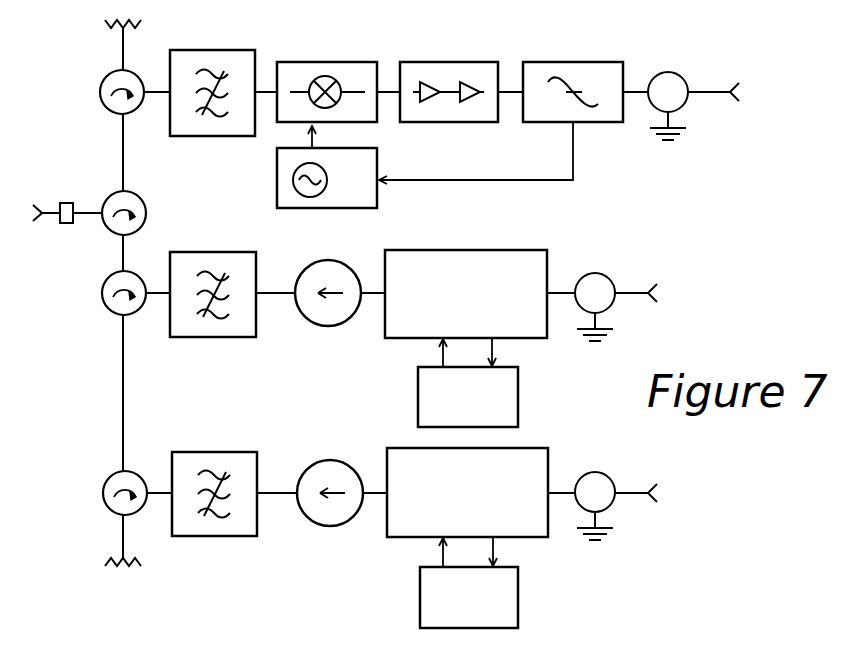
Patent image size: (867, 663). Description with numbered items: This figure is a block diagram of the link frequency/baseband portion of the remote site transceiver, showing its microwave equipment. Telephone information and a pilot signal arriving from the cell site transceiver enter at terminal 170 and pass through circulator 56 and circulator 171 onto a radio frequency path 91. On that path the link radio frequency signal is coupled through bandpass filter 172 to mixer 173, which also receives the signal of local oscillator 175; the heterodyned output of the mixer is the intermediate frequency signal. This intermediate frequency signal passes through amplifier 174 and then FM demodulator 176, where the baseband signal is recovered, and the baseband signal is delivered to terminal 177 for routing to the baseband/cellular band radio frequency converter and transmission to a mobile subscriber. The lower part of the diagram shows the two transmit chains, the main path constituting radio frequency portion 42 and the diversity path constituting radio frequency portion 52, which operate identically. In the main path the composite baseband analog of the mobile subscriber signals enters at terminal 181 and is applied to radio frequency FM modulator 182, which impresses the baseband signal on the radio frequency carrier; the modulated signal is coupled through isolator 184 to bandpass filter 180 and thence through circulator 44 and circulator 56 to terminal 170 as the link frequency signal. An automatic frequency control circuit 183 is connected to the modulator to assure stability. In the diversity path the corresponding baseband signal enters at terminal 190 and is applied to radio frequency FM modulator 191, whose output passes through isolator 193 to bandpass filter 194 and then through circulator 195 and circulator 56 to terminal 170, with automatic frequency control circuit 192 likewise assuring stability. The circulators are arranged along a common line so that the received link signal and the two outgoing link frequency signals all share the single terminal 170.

The circulator 171 is at (103, 108).
The circulator 56 is at (118, 192).
The terminal 170 is at (27, 213).
The circulator 44 is at (103, 297).
The circulator 195 is at (105, 507).
The bandpass filter 172 is at (233, 136).
The mixer 173 is at (318, 62).
The amplifier 174 is at (445, 62).
The FM demodulator 176 is at (555, 122).
The local oscillator 175 is at (292, 208).
The radio frequency path 91 is at (573, 163).
The terminal 177 is at (735, 90).
The radio frequency portion 42 is at (291, 390).
The bandpass filter 180 is at (183, 338).
The isolator 184 is at (306, 313).
The radio frequency FM modulator 182 is at (482, 252).
The automatic frequency control circuit 183 is at (518, 403).
The terminal 181 is at (663, 290).
The radio frequency portion 52 is at (300, 560).
The bandpass filter 194 is at (195, 536).
The isolator 193 is at (357, 483).
The radio frequency FM modulator 191 is at (548, 458).
The automatic frequency control circuit 192 is at (518, 606).
The terminal 190 is at (655, 486).